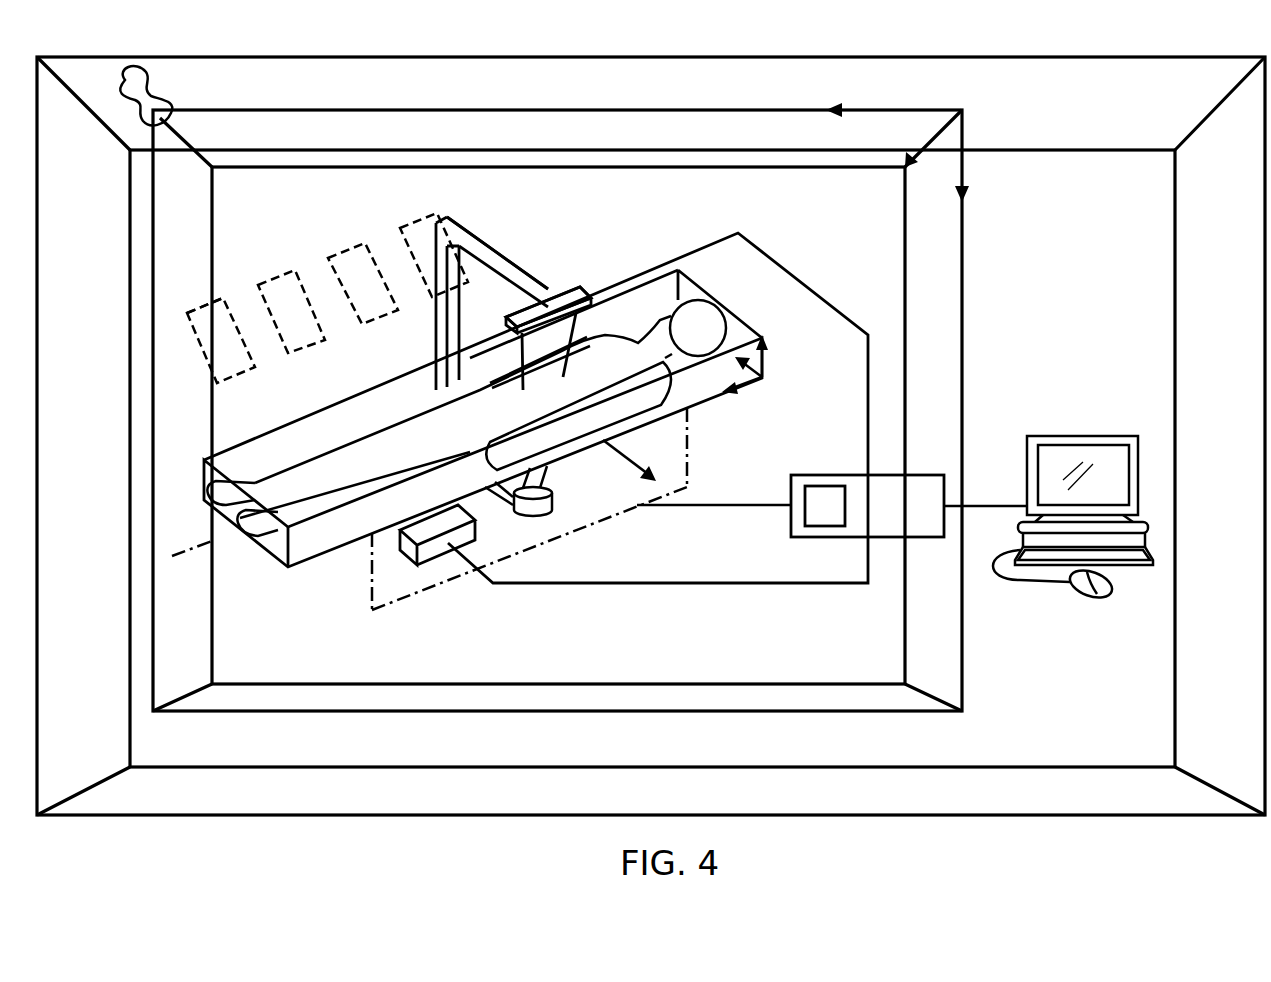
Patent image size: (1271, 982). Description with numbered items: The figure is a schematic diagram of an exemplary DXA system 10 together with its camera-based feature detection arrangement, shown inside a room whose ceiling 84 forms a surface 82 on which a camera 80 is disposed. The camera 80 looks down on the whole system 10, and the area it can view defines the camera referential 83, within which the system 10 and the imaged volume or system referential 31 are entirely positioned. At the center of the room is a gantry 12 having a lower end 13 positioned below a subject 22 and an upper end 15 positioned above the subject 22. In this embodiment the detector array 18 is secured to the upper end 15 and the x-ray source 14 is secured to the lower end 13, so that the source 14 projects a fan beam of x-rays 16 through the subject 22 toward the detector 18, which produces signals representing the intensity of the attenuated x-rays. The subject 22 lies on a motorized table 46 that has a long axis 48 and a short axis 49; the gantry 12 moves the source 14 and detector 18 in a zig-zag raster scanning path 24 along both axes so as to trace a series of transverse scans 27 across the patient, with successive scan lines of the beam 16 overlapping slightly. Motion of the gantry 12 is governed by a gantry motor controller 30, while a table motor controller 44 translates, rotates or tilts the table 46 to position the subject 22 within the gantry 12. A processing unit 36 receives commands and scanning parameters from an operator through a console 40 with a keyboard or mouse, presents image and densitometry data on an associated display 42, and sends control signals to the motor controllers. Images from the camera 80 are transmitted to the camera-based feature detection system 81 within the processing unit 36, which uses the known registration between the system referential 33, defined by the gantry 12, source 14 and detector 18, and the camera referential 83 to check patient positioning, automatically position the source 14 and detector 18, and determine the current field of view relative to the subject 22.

The DXA system 10 is at (796, 224).
The gantry 12 is at (462, 233).
The lower end 13 is at (497, 507).
The x-ray source 14 is at (545, 513).
The upper end 15 is at (493, 250).
The beam of x-rays 16 is at (577, 325).
The detector array 18 is at (565, 322).
The subject 22 is at (295, 472).
The raster scanning path 24 is at (275, 268).
The transverse scans 27 is at (257, 328).
The gantry motor controller 30 is at (441, 578).
The system referential 31 is at (737, 315).
The system referential 33 is at (770, 377).
The processing unit 36 is at (836, 475).
The console 40 is at (1048, 550).
The display 42 is at (1089, 455).
The table motor controller 44 is at (435, 560).
The table 46 is at (327, 563).
The long axis 48 is at (186, 565).
The short axis 49 is at (637, 447).
The camera 80 is at (137, 65).
The camera-based feature detection system 81 is at (791, 492).
The surface 82 is at (362, 92).
The camera referential 83 is at (847, 103).
The ceiling 84 is at (297, 78).